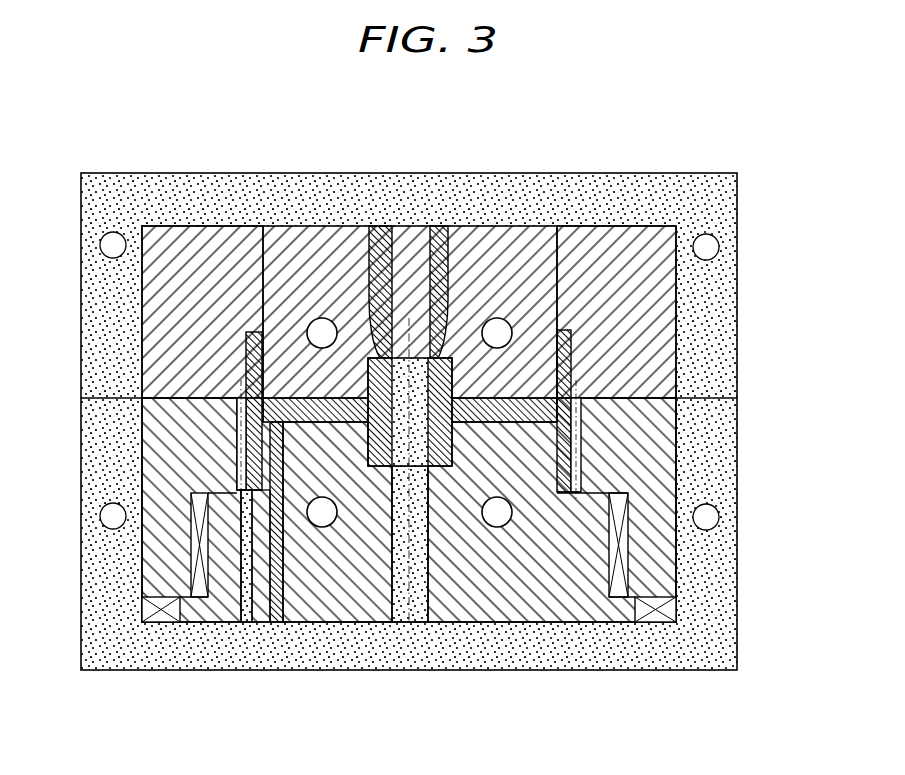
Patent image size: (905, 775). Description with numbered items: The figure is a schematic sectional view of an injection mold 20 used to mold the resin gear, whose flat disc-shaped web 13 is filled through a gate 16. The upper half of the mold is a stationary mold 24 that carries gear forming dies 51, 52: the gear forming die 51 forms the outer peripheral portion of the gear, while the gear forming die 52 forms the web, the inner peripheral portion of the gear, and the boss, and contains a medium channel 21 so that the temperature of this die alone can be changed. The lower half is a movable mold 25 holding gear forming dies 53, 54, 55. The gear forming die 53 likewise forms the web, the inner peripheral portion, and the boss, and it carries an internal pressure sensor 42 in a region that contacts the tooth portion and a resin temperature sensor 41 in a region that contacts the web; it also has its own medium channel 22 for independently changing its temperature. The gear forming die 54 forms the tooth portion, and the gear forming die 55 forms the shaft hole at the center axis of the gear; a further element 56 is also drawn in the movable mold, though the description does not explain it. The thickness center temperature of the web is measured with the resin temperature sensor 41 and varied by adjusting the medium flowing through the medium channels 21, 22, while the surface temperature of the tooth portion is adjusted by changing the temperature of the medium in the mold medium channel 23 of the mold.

The web 13 is at (524, 406).
The gate 16 is at (370, 356).
The injection mold 20 is at (737, 208).
The medium channel 21 is at (322, 330).
The medium channel 22 is at (322, 515).
The mold medium channel 23 is at (712, 517).
The stationary mold 24 is at (722, 306).
The movable mold 25 is at (722, 447).
The resin temperature sensor 41 is at (275, 620).
The internal pressure sensor 42 is at (244, 620).
The gear forming die 51 is at (153, 352).
The gear forming die 52 is at (282, 293).
The gear forming die 53 is at (355, 607).
The gear forming die 54 is at (155, 456).
The gear forming die 55 is at (190, 553).
The stopper 56 is at (150, 612).